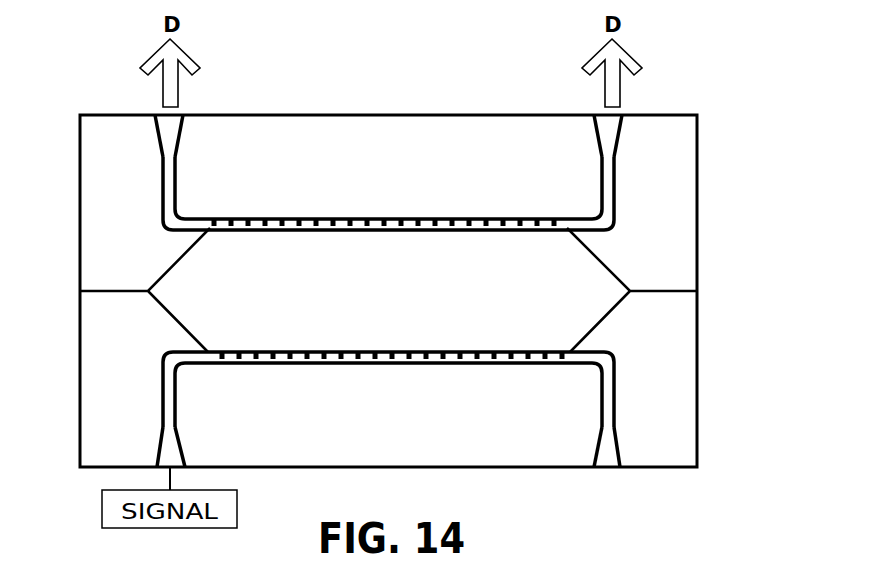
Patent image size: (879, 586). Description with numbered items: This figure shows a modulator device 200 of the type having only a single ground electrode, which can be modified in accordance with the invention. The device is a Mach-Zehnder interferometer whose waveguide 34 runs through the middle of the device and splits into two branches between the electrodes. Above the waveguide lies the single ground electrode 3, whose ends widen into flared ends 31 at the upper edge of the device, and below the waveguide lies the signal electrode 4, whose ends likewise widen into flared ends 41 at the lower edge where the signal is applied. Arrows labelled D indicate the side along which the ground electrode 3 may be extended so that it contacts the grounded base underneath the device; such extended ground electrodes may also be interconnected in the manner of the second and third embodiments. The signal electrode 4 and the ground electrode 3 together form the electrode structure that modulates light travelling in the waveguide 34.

The ground electrode 3 is at (608, 190).
The flared ends 31 is at (168, 127).
The waveguide 34 is at (177, 261).
The signal electrode 4 is at (610, 388).
The flared ends 41 is at (172, 453).
The modulator device 200 is at (667, 335).